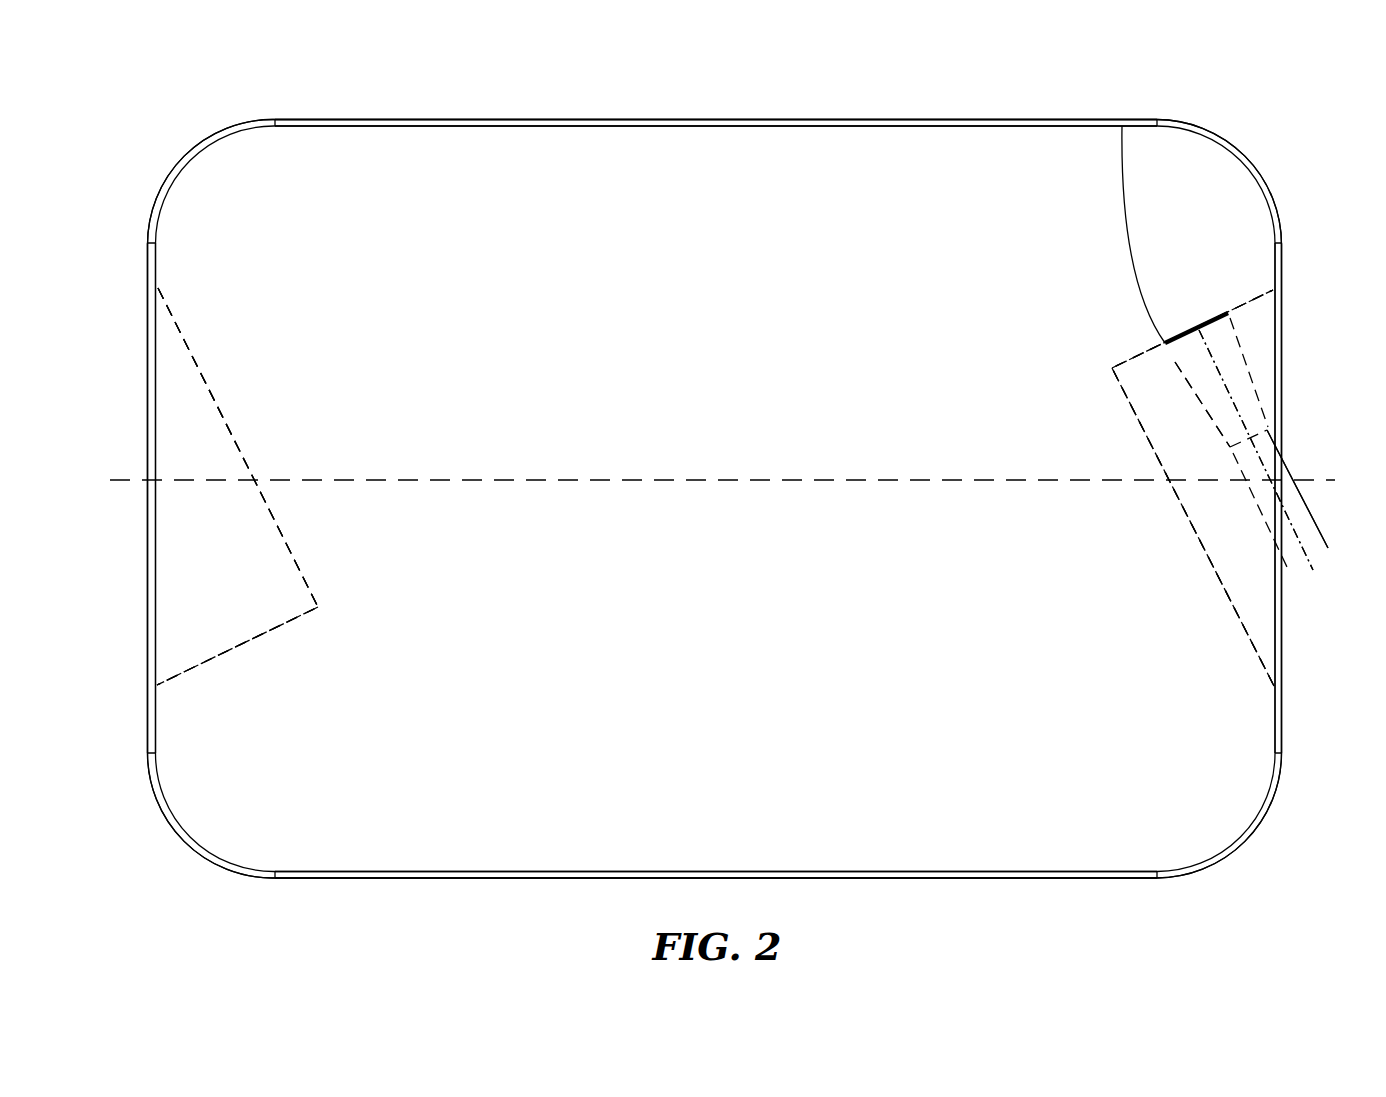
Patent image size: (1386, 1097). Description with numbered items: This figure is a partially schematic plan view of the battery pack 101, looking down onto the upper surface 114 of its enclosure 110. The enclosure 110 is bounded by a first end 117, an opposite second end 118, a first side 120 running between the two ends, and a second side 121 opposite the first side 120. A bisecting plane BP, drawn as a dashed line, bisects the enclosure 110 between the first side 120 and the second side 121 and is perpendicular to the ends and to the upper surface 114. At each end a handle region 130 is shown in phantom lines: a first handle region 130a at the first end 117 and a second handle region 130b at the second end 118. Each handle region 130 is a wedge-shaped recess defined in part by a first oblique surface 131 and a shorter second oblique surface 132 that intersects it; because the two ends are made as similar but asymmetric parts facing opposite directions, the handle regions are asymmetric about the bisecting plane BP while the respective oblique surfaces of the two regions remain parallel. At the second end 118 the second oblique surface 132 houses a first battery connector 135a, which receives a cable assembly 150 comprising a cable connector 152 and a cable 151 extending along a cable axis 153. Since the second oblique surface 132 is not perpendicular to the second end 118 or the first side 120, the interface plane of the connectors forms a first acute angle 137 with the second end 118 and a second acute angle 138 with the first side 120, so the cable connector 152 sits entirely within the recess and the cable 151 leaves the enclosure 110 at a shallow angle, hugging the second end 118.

The battery pack 101 is at (1285, 108).
The enclosure 110 is at (502, 118).
The upper surface 114 is at (375, 143).
The first end 117 is at (150, 777).
The second end 118 is at (1280, 262).
The first side 120 is at (678, 118).
The second side 121 is at (1030, 878).
The handle region 130 is at (128, 590).
The first handle region 130a is at (175, 617).
The second handle region 130b is at (1257, 598).
The first oblique surface 131 is at (216, 402).
The second oblique surface 132 is at (240, 645).
The first battery connector 135a is at (1175, 366).
The first acute angle 137 is at (1231, 319).
The second acute angle 138 is at (1123, 203).
The cable assembly 150 is at (1298, 448).
The cable 151 is at (1297, 493).
The cable connector 152 is at (1252, 371).
The cable axis 153 is at (1300, 533).
The bisecting plane BP is at (743, 480).